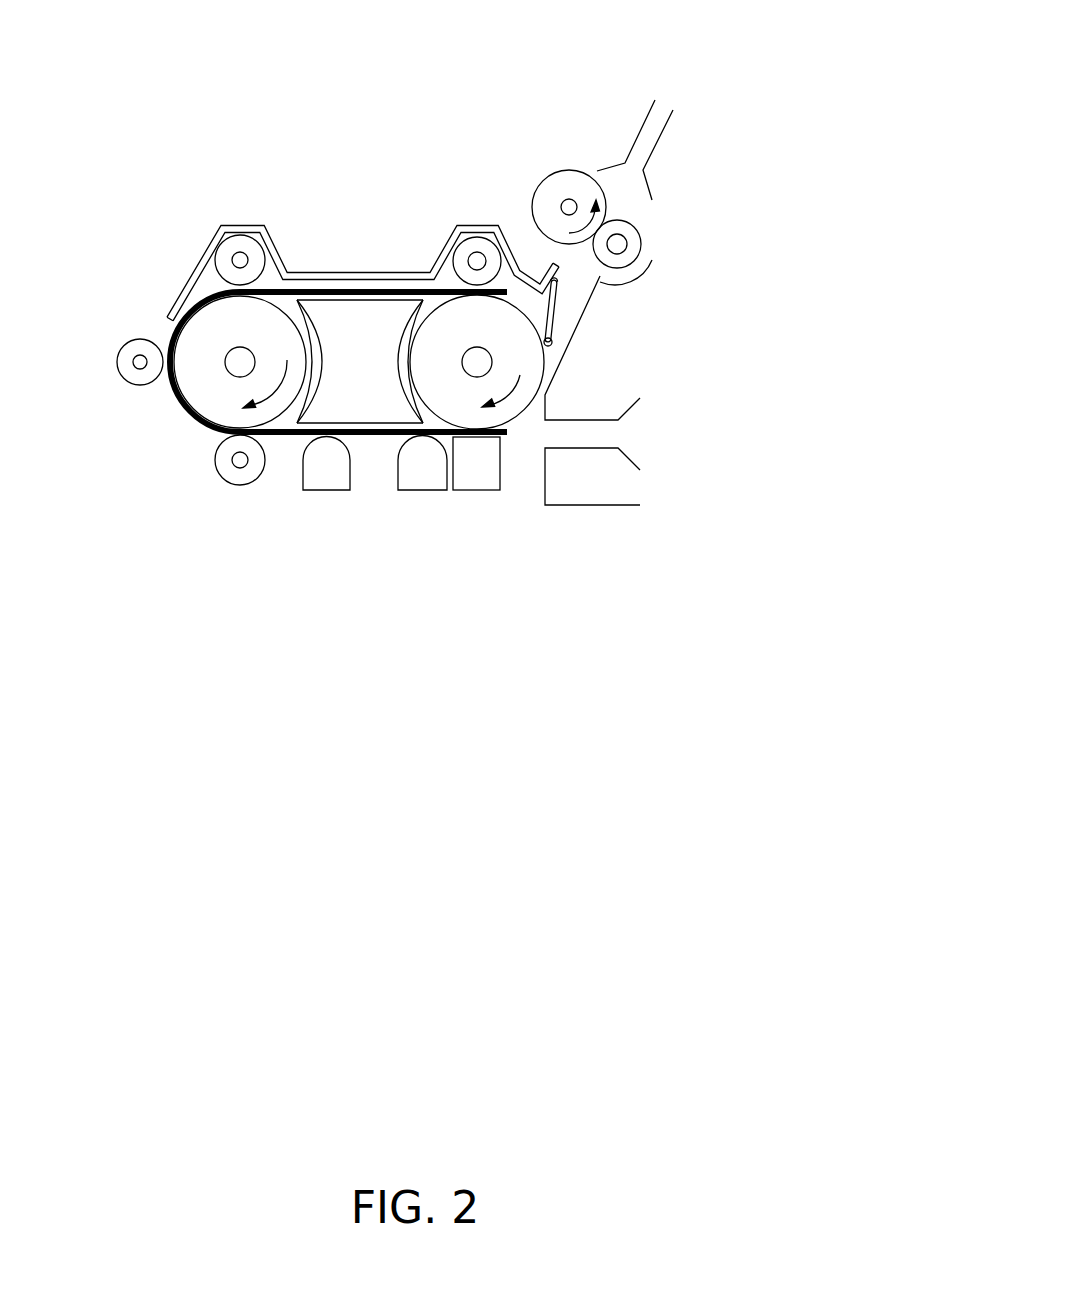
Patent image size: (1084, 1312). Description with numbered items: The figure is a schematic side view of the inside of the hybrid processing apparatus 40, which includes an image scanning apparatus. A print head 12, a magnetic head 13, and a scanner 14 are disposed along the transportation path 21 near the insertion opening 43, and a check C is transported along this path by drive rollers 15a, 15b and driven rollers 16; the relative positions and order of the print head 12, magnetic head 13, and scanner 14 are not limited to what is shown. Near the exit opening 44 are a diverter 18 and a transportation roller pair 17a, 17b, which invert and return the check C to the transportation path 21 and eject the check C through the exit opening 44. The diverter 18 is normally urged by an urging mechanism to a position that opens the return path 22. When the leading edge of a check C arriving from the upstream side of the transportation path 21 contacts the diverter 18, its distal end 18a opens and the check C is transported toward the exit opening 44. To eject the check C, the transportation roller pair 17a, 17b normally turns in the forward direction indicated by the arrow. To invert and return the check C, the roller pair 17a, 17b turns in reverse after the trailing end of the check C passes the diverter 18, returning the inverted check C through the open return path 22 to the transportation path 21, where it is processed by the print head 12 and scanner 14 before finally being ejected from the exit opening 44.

The print head 12 is at (476, 482).
The magnetic head 13 is at (422, 482).
The scanner 14 is at (327, 482).
The drive roller 15a is at (438, 325).
The drive roller 15b is at (277, 325).
The driven rollers 16 is at (240, 247).
The transportation roller 17a is at (568, 183).
The transportation roller 17b is at (637, 240).
The diverter 18 is at (555, 320).
The distal end 18a is at (560, 283).
The transportation path 21 is at (370, 428).
The return path 22 is at (557, 343).
The hybrid processing apparatus 40 is at (760, 268).
The insertion opening 43 is at (650, 452).
The exit opening 44 is at (668, 92).
The check C is at (187, 422).